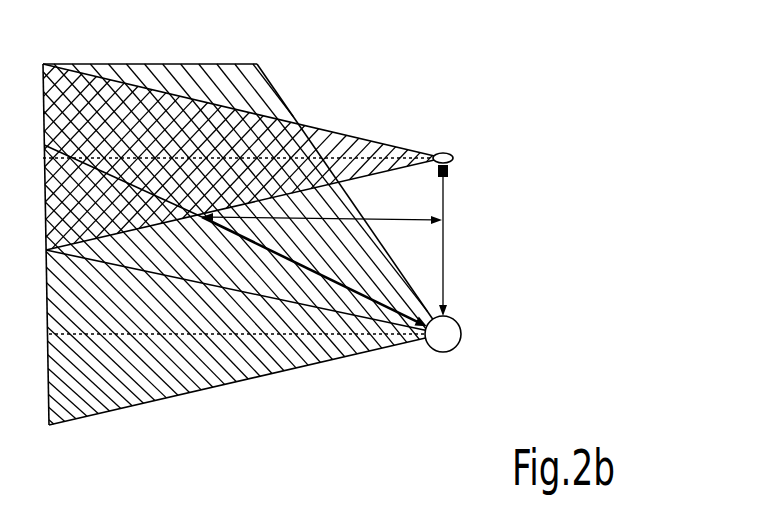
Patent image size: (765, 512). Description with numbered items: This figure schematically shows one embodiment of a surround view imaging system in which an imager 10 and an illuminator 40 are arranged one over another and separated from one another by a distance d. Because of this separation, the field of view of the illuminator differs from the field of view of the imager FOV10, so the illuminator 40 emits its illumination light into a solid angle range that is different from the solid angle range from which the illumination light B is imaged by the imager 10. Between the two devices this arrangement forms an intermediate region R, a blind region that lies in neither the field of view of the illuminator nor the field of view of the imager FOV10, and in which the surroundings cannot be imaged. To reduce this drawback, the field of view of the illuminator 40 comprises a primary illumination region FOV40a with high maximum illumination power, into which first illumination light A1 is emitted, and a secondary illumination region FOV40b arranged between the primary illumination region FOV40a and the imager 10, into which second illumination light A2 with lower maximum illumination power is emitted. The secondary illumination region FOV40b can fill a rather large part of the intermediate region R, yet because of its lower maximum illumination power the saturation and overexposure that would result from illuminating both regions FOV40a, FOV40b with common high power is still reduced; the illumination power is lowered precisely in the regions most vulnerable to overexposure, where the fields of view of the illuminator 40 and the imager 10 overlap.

The imager 10 is at (455, 153).
The illuminator 40 is at (447, 343).
The field of view of the imager FOV10 is at (360, 136).
The primary illumination region FOV40a is at (205, 355).
The secondary illumination region FOV40b is at (361, 273).
The intermediate region R is at (322, 206).
The distance d is at (451, 246).
The illumination light imaged by the imager B is at (338, 147).
The first illumination light A1 is at (231, 293).
The second illumination light A2 is at (324, 245).